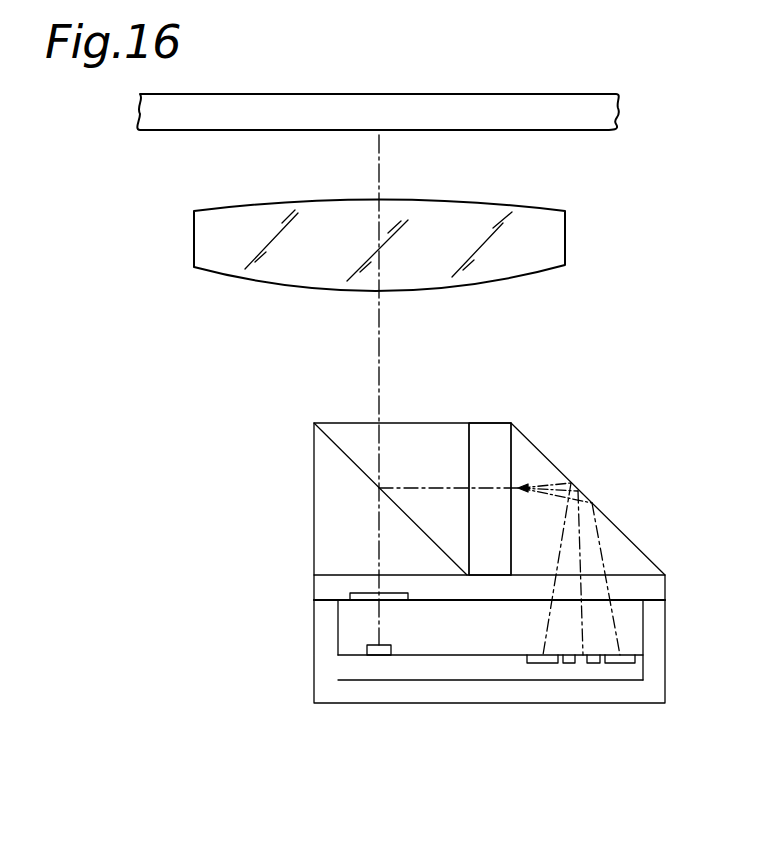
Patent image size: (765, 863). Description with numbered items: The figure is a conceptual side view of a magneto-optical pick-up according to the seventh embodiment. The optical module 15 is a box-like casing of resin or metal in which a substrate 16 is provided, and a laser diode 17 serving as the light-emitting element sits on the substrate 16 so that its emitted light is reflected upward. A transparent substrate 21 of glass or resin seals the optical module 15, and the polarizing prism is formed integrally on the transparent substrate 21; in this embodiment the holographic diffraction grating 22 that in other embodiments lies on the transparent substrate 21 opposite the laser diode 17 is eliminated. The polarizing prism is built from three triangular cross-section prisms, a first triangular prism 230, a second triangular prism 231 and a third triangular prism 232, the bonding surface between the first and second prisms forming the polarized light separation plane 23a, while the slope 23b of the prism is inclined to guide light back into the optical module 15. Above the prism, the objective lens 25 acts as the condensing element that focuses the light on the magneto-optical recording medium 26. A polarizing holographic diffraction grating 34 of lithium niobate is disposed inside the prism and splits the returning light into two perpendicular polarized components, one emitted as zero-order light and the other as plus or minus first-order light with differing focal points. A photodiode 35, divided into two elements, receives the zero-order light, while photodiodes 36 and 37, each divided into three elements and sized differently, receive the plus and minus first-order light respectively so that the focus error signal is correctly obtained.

The optical module 15 is at (313, 650).
The substrate 16 is at (348, 665).
The laser diode 17 is at (383, 658).
The transparent substrate 21 is at (248, 582).
The holographic diffraction grating 22 is at (390, 593).
The polarized light separation plane 23a is at (356, 467).
The slope 23b is at (607, 518).
The objective lens 25 is at (258, 270).
The magneto-optical recording medium 26 is at (590, 121).
The polarizing holographic diffraction grating 34 is at (488, 431).
The photodiode 35 is at (580, 664).
The photodiode 36 is at (548, 664).
The photodiode 37 is at (622, 664).
The first triangular prism 230 is at (346, 516).
The second triangular prism 231 is at (349, 431).
The third triangular prism 232 is at (523, 468).